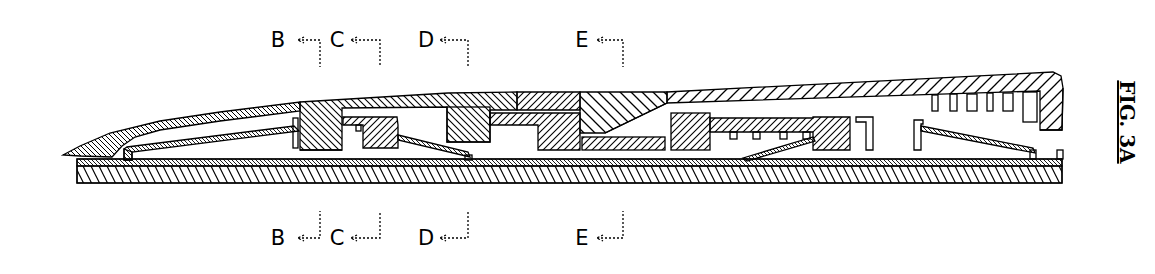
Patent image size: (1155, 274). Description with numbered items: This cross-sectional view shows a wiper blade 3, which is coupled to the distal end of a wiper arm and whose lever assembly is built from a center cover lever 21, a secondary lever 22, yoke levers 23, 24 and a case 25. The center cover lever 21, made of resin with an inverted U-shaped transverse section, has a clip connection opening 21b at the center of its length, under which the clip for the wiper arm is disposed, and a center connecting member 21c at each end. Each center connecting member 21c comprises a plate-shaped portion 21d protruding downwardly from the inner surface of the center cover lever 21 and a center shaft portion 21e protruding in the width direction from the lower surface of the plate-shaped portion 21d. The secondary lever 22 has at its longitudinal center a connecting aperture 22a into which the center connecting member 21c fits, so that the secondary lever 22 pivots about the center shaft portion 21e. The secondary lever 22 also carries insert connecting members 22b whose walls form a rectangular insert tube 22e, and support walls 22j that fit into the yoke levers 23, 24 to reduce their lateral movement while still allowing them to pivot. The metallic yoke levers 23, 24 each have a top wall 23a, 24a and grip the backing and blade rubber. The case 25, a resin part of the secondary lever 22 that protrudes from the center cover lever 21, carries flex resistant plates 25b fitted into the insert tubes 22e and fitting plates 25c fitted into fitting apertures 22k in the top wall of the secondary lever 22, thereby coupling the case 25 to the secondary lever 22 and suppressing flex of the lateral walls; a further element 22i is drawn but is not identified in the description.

The wiper blade 3 is at (753, 62).
The center cover lever 21 is at (882, 81).
The clip connection opening 21b is at (1055, 72).
The center connecting member 21c is at (653, 130).
The plate-shaped portion 21d is at (593, 127).
The center shaft portion 21e is at (612, 150).
The secondary lever 22 is at (540, 92).
The connecting aperture 22a is at (688, 110).
The insert connecting member 22b is at (273, 184).
The insert tube 22e is at (347, 182).
The housing inner wall 22i is at (398, 182).
The support wall 22j is at (823, 150).
The fitting aperture 22k is at (492, 92).
The yoke lever 23 is at (233, 132).
The top wall 23a is at (155, 140).
The yoke lever 24 is at (936, 130).
The top wall 24a is at (986, 134).
The case 25 is at (192, 113).
The flex resistant plate 25b is at (298, 182).
The fitting plate 25c is at (483, 162).